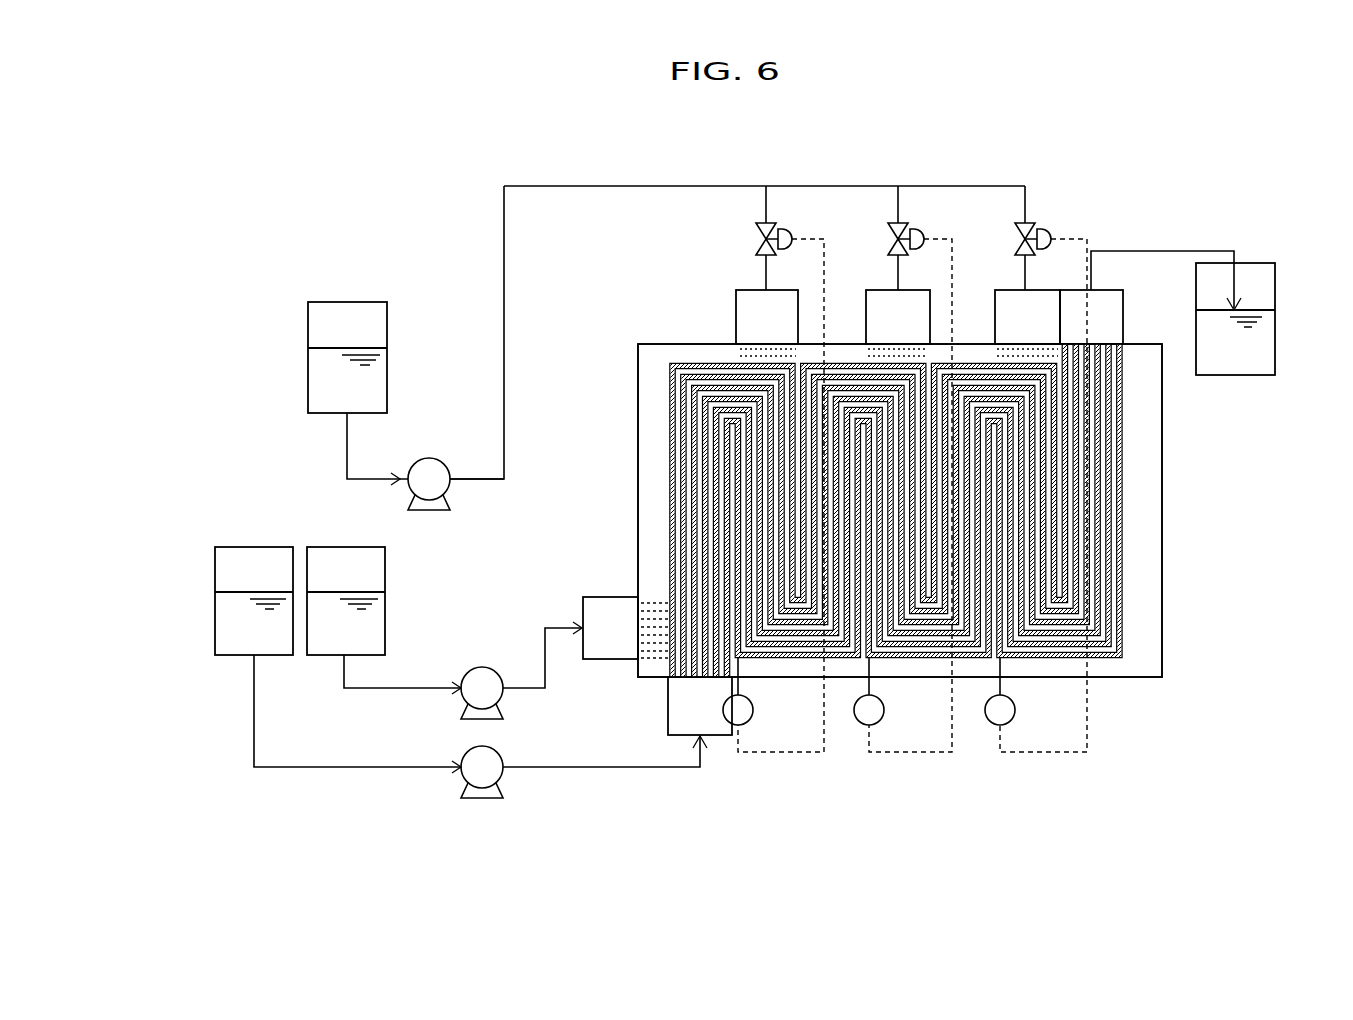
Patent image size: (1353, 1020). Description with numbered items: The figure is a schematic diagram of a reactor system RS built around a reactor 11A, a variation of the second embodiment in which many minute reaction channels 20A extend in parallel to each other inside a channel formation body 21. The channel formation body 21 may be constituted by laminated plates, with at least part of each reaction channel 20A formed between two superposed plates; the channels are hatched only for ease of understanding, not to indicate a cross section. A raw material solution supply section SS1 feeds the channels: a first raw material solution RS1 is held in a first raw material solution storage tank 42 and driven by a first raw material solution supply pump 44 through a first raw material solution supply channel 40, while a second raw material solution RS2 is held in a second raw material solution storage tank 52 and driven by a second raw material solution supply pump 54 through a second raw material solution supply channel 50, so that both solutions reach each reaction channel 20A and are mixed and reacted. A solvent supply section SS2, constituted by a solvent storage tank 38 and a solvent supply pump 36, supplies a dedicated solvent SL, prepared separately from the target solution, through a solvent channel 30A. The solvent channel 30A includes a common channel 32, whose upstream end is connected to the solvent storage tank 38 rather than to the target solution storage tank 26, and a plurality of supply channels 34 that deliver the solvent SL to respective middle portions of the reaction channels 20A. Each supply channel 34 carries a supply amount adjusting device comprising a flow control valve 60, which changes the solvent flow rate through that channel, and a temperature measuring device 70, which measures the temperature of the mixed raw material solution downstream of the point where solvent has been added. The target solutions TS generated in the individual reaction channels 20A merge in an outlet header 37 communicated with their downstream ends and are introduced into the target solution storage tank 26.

The reactor system RS is at (1103, 146).
The reactor 11A is at (620, 322).
The channel formation body 21 is at (1168, 475).
The reaction channels 20A is at (688, 422).
The target solution storage tank 26 is at (1215, 295).
The target solution TS is at (1276, 323).
The common channel 32 is at (505, 350).
The solvent channel 30A is at (484, 486).
The supply channels 34 is at (770, 200).
The solvent supply pump 36 is at (430, 457).
The outlet header 37 is at (1124, 307).
The solvent storage tank 38 is at (319, 333).
The solvent SL is at (308, 372).
The solvent supply section SS2 is at (421, 378).
The first raw material solution supply channel 40 is at (521, 694).
The first raw material solution storage tank 42 is at (384, 596).
The first raw material solution RS1 is at (385, 604).
The first raw material solution supply pump 44 is at (490, 668).
The second raw material solution supply channel 50 is at (535, 778).
The second raw material solution storage tank 52 is at (210, 596).
The second raw material solution RS2 is at (207, 599).
The second raw material solution supply pump 54 is at (500, 748).
The raw material solution supply section SS1 is at (396, 802).
The flow control valve 60 is at (757, 232).
The temperature measuring device 70 is at (754, 714).